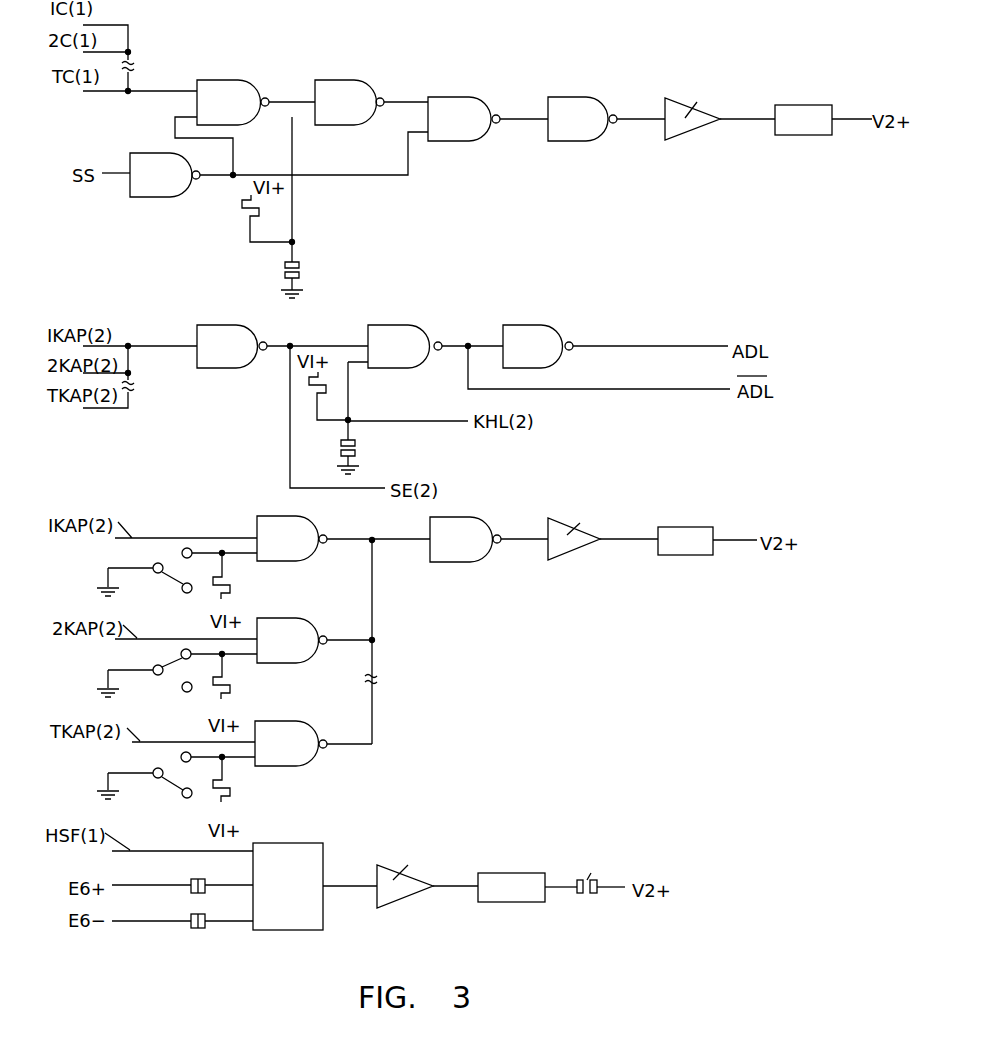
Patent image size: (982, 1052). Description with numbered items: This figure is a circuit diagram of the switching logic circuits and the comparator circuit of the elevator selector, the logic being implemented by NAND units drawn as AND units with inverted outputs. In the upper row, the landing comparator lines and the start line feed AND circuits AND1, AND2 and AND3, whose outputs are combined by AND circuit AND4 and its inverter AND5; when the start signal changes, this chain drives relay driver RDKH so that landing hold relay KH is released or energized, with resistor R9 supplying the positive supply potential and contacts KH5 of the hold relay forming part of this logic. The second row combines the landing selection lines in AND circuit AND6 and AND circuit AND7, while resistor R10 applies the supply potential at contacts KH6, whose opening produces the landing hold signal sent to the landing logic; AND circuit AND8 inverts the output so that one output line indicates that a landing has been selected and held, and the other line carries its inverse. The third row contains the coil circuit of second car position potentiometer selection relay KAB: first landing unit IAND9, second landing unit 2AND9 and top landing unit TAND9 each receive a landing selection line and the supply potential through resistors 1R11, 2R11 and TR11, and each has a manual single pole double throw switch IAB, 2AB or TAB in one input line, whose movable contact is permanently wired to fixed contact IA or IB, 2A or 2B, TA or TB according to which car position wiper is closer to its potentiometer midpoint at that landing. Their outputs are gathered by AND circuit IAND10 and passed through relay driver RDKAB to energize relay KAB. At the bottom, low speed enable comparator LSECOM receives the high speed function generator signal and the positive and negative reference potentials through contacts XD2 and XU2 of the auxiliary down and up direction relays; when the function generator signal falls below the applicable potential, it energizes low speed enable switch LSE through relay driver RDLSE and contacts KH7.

The AND circuit AND1 is at (165, 175).
The AND circuit AND2 is at (233, 102).
The AND circuit AND3 is at (349, 102).
The AND circuit AND4 is at (464, 119).
The AND circuit AND5 is at (582, 119).
The AND circuit AND6 is at (232, 346).
The AND circuit AND7 is at (405, 346).
The AND circuit AND8 is at (538, 346).
The first landing AND circuit IAND9 is at (292, 538).
The second landing AND circuit 2AND9 is at (292, 640).
The top landing AND circuit TAND9 is at (291, 743).
The AND circuit IAND10 is at (465, 539).
The relay driver RDKH is at (696, 108).
The relay driver RDKAB is at (584, 530).
The relay driver RDLSE is at (410, 877).
The landing hold relay KH is at (803, 120).
The second car position potentiometer selection relay KAB is at (685, 541).
The low speed enable switch LSE is at (511, 887).
The low speed enable comparator LSECOM is at (288, 886).
The resistor R9 is at (242, 207).
The resistor R10 is at (312, 390).
The first landing resistor 1R11 is at (230, 577).
The second landing resistor 2R11 is at (230, 682).
The top landing resistor TR11 is at (230, 785).
The landing hold relay contacts KH5 is at (303, 270).
The landing hold relay contacts KH6 is at (355, 446).
The landing hold relay contacts KH7 is at (591, 872).
The auxiliary down direction relay contacts XD2 is at (203, 874).
The auxiliary up direction relay contacts XU2 is at (192, 928).
The first landing fixed contact A IA is at (182, 551).
The first landing fixed contact B IB is at (190, 594).
The first landing manual single pole double throw switch IAB is at (166, 576).
The second landing fixed contact A 2A is at (184, 691).
The second landing fixed contact B 2B is at (180, 652).
The second landing manual single pole double throw switch 2AB is at (165, 677).
The top landing fixed contact A TA is at (188, 798).
The top landing fixed contact B TB is at (182, 755).
The top landing manual single pole double throw switch TAB is at (166, 781).